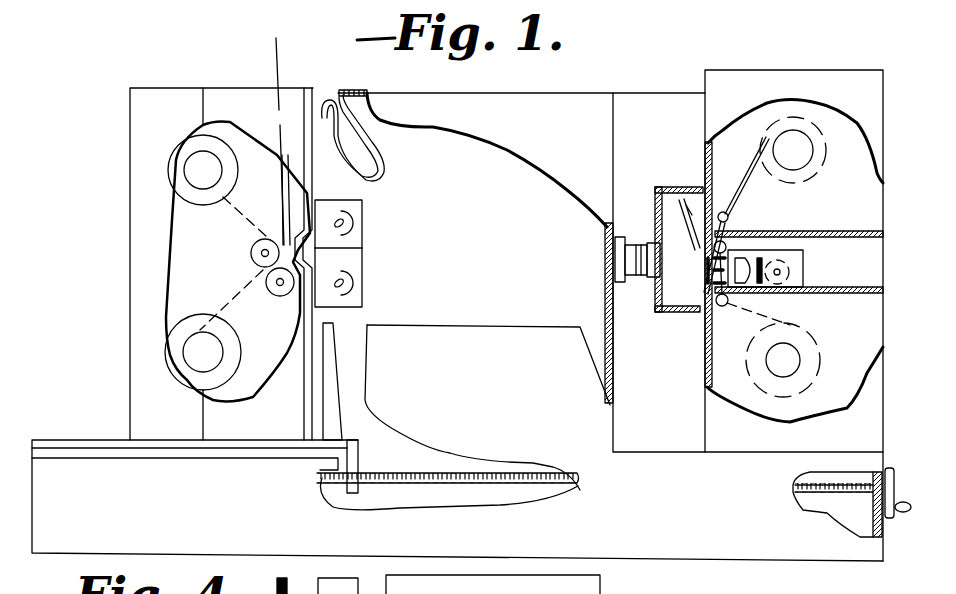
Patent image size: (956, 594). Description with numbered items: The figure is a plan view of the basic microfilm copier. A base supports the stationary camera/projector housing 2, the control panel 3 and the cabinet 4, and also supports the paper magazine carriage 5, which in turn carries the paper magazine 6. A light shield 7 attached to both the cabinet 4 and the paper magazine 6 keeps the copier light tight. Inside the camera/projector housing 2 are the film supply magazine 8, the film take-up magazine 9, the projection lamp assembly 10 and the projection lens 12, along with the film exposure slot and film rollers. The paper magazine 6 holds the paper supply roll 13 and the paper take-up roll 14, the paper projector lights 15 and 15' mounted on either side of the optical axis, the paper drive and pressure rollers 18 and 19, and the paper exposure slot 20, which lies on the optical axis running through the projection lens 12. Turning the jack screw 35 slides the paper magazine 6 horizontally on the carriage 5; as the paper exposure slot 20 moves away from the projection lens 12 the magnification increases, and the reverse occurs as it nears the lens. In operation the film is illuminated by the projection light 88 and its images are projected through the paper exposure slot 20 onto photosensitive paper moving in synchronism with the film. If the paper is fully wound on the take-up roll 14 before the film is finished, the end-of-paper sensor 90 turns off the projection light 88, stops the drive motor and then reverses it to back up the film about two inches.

The camera/projector housing 2 is at (806, 70).
The control panel 3 is at (465, 417).
The cabinet 4 is at (543, 142).
The paper magazine carriage 5 is at (80, 440).
The paper magazine 6 is at (165, 88).
The light shield 7 is at (380, 178).
The film supply magazine 8 is at (795, 360).
The film take-up magazine 9 is at (803, 180).
The projection lamp assembly 10 is at (805, 271).
The projection lens 12 is at (617, 280).
The paper supply roll 13 is at (228, 198).
The paper take-up roll 14 is at (245, 366).
The paper projector light 15 is at (366, 277).
The paper projector light 15' is at (369, 224).
The paper drive roller 18 is at (250, 253).
The paper pressure roller 19 is at (286, 295).
The paper exposure slot 20 is at (362, 248).
The jack screw 35 is at (404, 472).
The projection light 88 is at (778, 265).
The end-of-paper sensor 90 is at (887, 467).